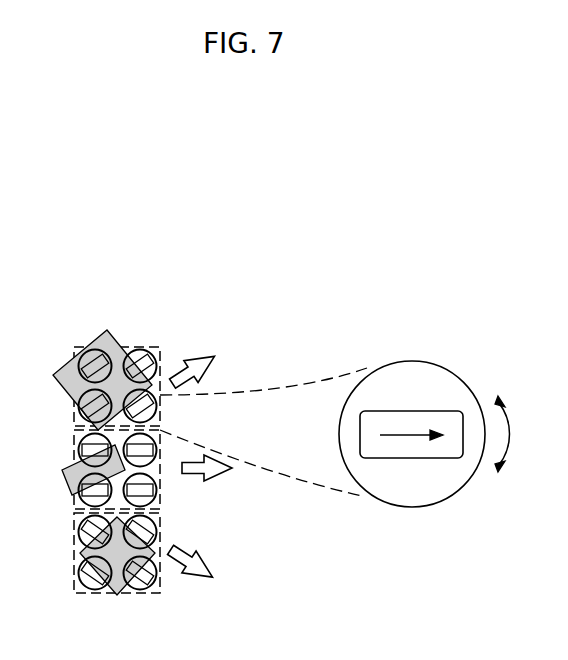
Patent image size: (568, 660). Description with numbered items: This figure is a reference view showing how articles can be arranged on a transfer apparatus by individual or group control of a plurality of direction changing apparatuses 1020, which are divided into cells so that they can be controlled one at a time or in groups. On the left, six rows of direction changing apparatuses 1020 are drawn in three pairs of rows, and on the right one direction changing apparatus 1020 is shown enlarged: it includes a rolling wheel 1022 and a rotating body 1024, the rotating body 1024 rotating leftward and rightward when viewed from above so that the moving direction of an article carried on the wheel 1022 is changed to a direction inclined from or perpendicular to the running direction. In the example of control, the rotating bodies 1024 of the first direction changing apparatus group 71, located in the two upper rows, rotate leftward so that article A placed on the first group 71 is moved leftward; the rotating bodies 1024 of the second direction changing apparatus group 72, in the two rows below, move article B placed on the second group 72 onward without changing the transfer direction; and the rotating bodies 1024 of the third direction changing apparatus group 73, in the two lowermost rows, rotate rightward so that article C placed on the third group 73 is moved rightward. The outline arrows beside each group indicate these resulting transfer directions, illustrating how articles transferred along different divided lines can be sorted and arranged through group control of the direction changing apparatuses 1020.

The first direction changing apparatus group 71 is at (108, 377).
The second direction changing apparatus group 72 is at (119, 469).
The third direction changing apparatus group 73 is at (126, 554).
The article A is at (68, 388).
The article B is at (63, 485).
The article C is at (80, 555).
The direction changing apparatus 1020 is at (424, 439).
The wheel 1022 is at (403, 459).
The rotating body 1024 is at (447, 500).